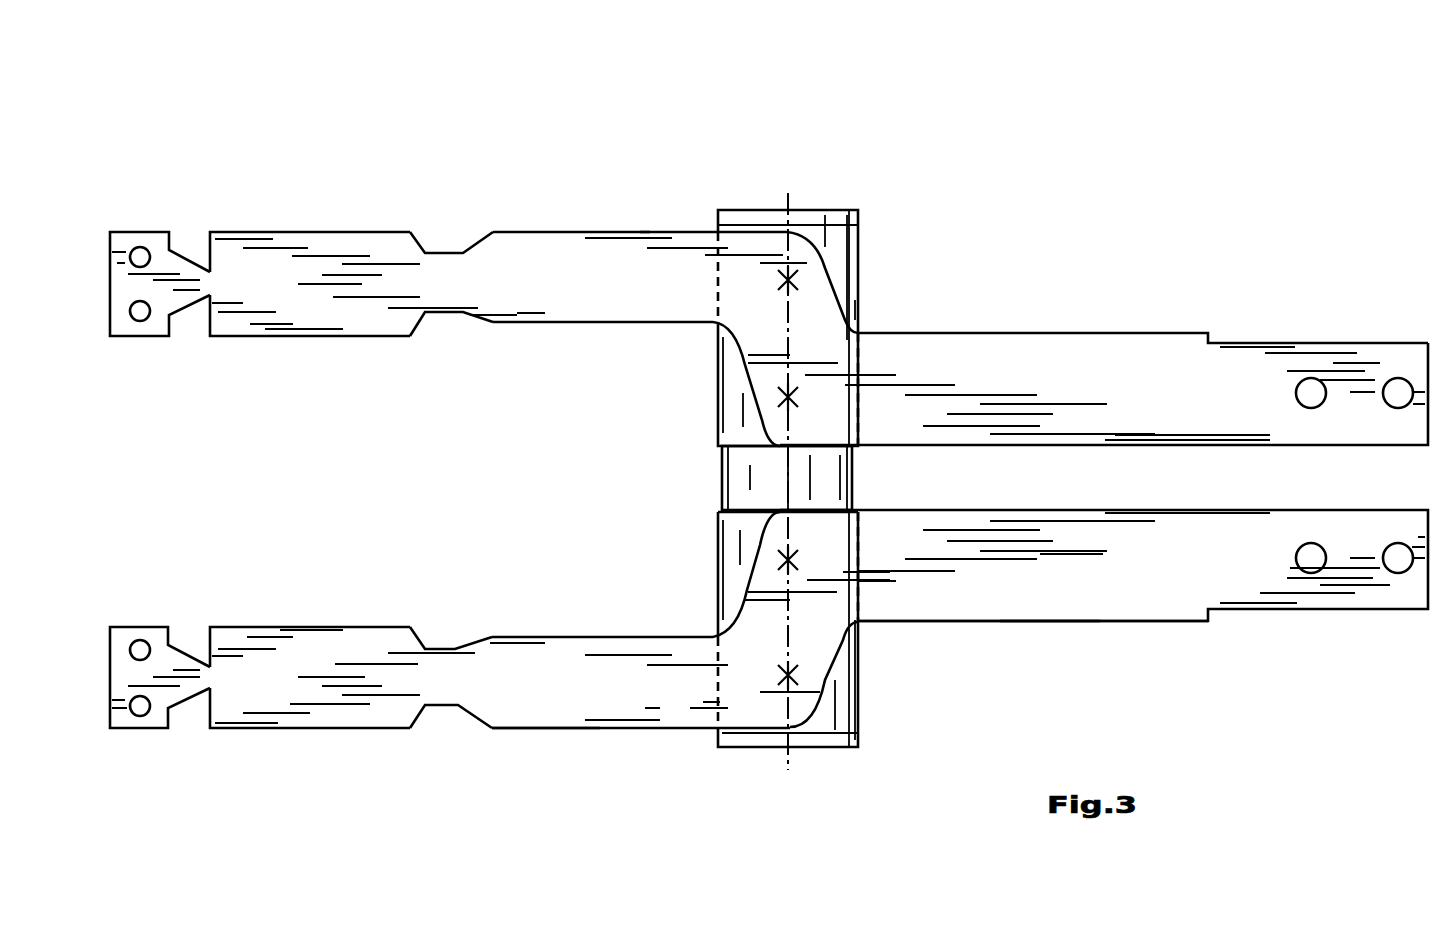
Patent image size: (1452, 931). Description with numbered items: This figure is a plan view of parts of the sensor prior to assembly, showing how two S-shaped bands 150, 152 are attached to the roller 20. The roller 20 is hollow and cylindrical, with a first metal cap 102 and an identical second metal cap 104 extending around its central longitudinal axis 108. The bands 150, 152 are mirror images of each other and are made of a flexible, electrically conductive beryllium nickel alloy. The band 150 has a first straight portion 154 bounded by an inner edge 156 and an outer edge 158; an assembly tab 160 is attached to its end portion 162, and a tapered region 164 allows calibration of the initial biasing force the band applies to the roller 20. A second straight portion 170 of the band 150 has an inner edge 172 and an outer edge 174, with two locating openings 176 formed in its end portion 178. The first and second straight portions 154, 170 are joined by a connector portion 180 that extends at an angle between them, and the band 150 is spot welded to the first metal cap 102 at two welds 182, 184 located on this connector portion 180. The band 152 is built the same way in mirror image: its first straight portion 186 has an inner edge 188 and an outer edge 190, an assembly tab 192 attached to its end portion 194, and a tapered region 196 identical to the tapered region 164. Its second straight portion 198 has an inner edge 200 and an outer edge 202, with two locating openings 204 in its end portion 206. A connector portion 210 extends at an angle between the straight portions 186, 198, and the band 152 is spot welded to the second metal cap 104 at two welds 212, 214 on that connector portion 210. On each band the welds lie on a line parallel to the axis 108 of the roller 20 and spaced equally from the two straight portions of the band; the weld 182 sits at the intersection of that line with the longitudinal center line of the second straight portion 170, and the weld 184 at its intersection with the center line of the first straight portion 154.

The roller 20 is at (716, 480).
The first metal cap 102 is at (840, 720).
The second metal cap 104 is at (840, 248).
The central longitudinal axis 108 is at (791, 200).
The S-shaped band 150 is at (480, 572).
The S-shaped band 152 is at (505, 365).
The first straight portion 154 is at (546, 732).
The inner edge 156 is at (632, 638).
The outer edge 158 is at (600, 730).
The assembly tab 160 is at (142, 625).
The end portion 162 is at (282, 705).
The tapered region 164 is at (443, 692).
The second straight portion 170 is at (1120, 627).
The inner edge 172 is at (880, 520).
The outer edge 174 is at (1055, 622).
The locating openings 176 is at (1315, 562).
The end portion 178 is at (1208, 570).
The connector portion 180 is at (745, 590).
The weld 182 is at (795, 560).
The weld 184 is at (795, 675).
The first straight portion 186 is at (581, 226).
The inner edge 188 is at (662, 325).
The outer edge 190 is at (653, 233).
The assembly tab 192 is at (133, 338).
The end portion 194 is at (273, 292).
The tapered region 196 is at (448, 283).
The second straight portion 198 is at (1156, 326).
The inner edge 200 is at (1105, 445).
The outer edge 202 is at (955, 333).
The locating openings 204 is at (1395, 390).
The end portion 206 is at (1245, 388).
The connector portion 210 is at (745, 382).
The weld 212 is at (793, 398).
The weld 214 is at (795, 283).